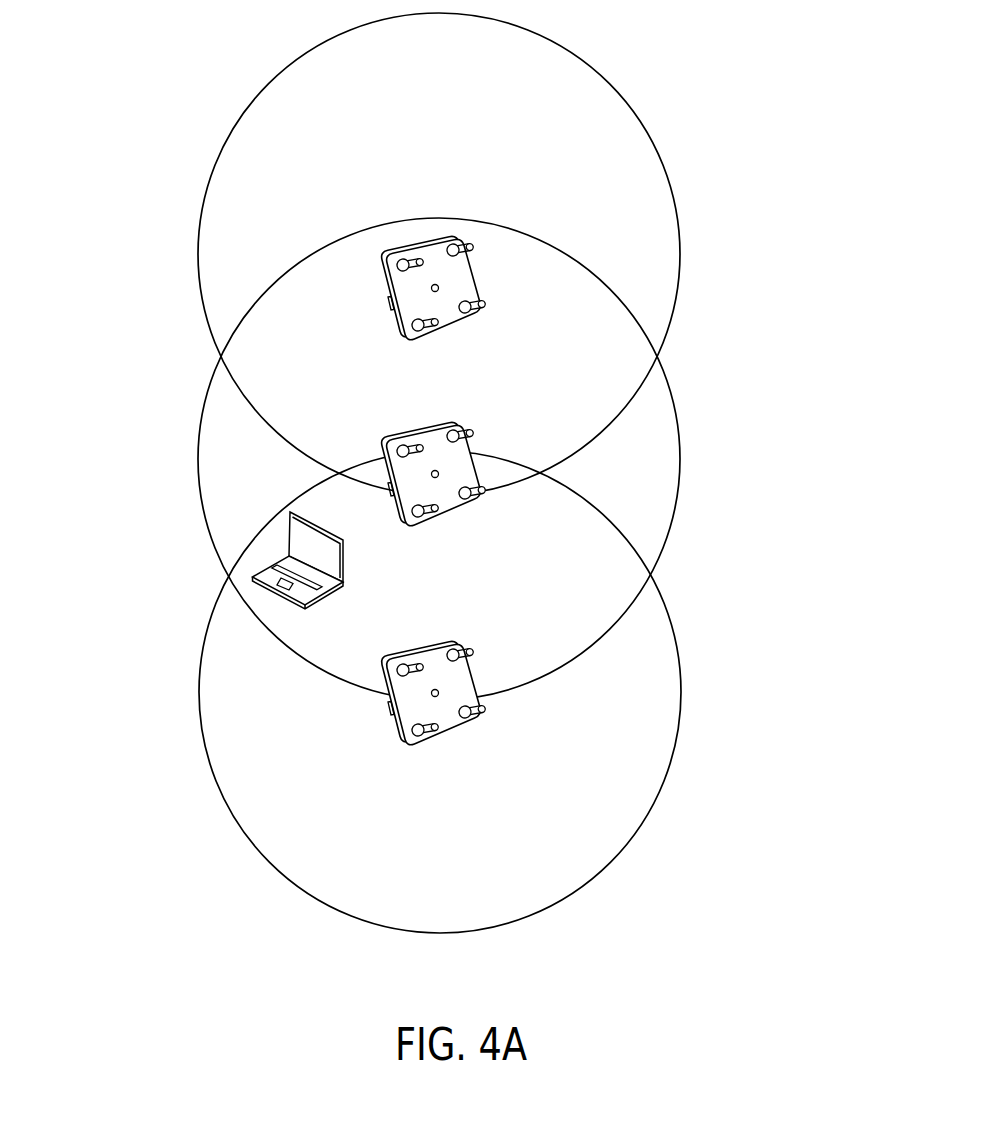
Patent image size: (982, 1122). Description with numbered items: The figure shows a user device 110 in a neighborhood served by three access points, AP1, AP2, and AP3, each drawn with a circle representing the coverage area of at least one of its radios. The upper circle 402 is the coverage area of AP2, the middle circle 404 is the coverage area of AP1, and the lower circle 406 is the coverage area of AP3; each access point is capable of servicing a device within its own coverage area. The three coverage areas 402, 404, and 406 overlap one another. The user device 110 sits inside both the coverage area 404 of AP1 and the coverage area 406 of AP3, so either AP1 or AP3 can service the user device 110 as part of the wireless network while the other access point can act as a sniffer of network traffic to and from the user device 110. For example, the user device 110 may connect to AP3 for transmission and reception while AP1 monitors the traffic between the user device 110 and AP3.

The coverage area 402 is at (517, 112).
The coverage area 404 is at (615, 435).
The coverage area 406 is at (518, 799).
The access point AP1 is at (377, 453).
The access point AP2 is at (373, 268).
The access point AP3 is at (373, 690).
The user device 110 is at (258, 560).